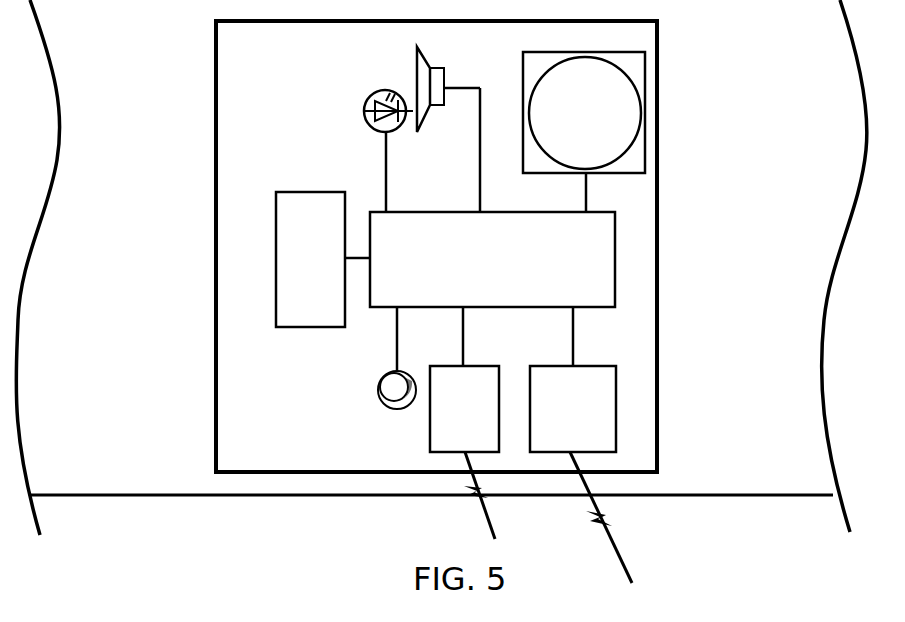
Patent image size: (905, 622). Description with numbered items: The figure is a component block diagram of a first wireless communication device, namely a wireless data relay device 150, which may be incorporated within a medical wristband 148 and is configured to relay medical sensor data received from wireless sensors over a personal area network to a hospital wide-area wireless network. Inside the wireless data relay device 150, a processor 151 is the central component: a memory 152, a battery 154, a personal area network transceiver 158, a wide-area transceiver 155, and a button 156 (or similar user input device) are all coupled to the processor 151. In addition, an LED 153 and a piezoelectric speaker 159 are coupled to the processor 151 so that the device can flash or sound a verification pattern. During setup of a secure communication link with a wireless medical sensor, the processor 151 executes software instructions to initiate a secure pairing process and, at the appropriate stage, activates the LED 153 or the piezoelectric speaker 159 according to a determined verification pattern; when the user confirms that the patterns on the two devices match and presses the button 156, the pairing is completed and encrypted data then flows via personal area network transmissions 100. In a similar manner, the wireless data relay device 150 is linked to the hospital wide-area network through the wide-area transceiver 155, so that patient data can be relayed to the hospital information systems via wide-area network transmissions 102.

The personal area network transmissions 100 is at (472, 504).
The wide-area network transmissions 102 is at (606, 540).
The medical wristband 148 is at (262, 514).
The wireless data relay device 150 is at (659, 178).
The processor 151 is at (474, 268).
The memory 152 is at (292, 268).
The LED 153 is at (381, 89).
The battery 154 is at (567, 123).
The wide-area transceiver 155 is at (555, 418).
The button 156 is at (378, 386).
The personal area network transceiver 158 is at (446, 418).
The piezoelectric speaker 159 is at (446, 71).